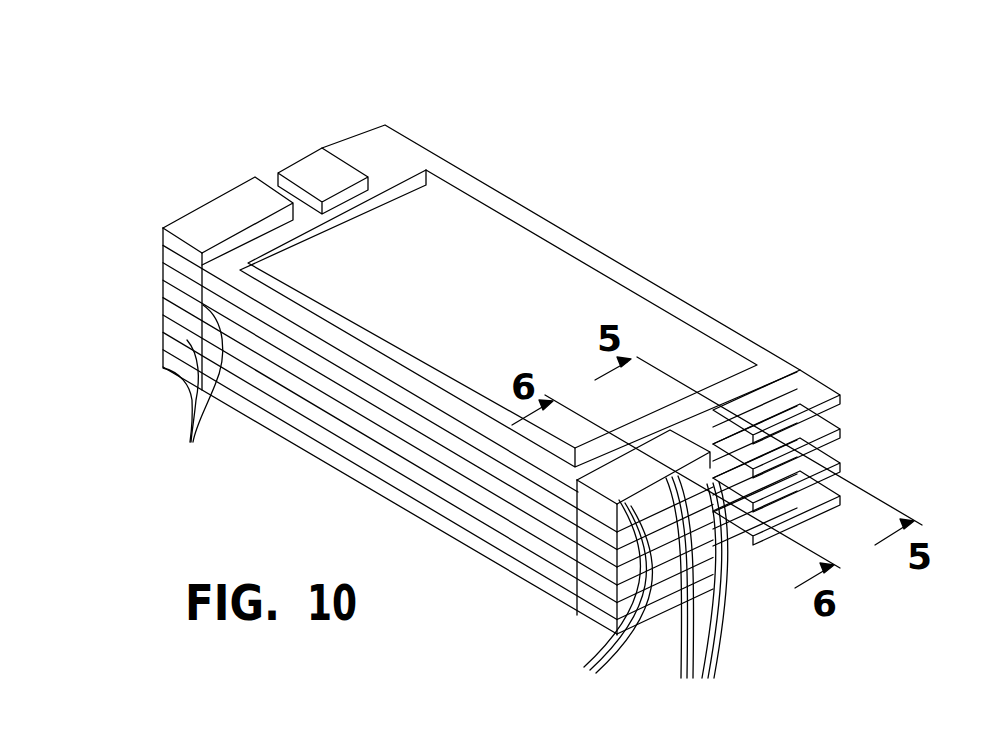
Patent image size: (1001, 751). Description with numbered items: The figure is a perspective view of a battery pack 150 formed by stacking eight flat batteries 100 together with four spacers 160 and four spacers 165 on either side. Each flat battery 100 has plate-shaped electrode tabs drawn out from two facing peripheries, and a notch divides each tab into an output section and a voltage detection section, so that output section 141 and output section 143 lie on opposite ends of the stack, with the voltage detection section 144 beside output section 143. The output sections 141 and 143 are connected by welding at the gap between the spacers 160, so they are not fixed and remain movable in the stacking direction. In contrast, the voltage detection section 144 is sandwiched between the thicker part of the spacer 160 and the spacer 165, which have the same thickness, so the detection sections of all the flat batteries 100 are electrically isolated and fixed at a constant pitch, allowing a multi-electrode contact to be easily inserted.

The flat battery 100 is at (580, 204).
The battery pack 150 is at (209, 90).
The output section 141 is at (315, 167).
The output section 143 is at (795, 400).
The voltage detection section 144 is at (708, 597).
The spacer 160 is at (163, 275).
The spacer 165 is at (165, 236).